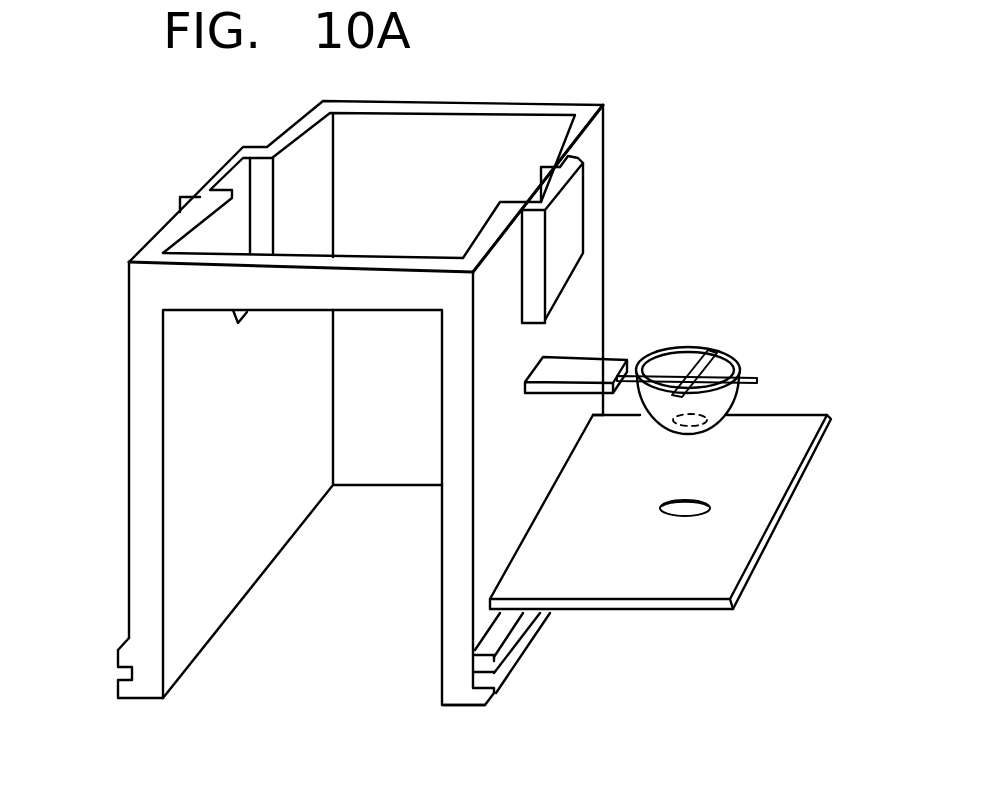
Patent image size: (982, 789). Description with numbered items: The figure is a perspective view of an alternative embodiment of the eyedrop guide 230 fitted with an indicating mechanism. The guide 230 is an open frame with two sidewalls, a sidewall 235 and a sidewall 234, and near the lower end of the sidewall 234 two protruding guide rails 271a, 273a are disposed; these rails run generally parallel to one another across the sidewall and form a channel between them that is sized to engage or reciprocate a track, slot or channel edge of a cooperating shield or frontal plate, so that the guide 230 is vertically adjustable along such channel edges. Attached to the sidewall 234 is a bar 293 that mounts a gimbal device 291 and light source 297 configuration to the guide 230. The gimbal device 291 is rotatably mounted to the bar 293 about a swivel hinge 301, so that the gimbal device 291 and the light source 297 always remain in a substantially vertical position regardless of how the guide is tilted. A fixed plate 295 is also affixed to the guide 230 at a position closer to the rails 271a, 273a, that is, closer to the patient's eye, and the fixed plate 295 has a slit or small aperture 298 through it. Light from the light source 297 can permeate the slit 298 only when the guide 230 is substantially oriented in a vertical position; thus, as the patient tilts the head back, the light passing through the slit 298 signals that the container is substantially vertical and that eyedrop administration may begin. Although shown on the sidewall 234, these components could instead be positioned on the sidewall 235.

The eyedrop guide 230 is at (340, 436).
The sidewall 235 is at (253, 457).
The sidewall 234 is at (553, 452).
The bar 293 is at (608, 363).
The swivel hinge 301 is at (632, 370).
The gimbal device 291 is at (708, 352).
The light source 297 is at (700, 403).
The slit or small aperture 298 is at (695, 509).
The fixed plate 295 is at (697, 590).
The guide rail 273a is at (493, 668).
The guide rail 271a is at (485, 707).